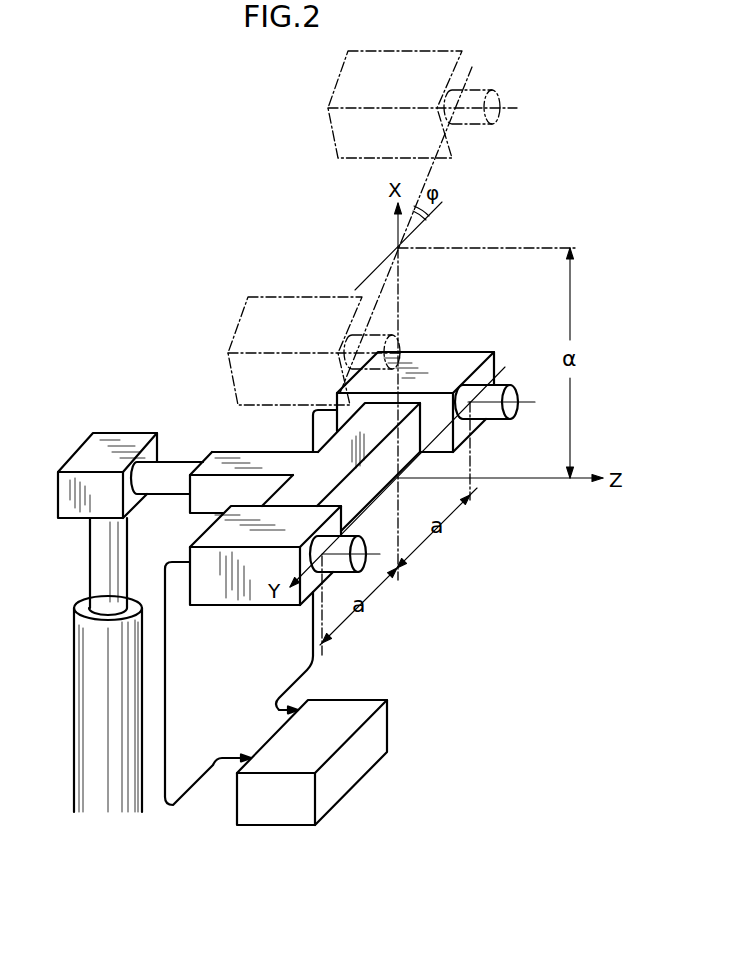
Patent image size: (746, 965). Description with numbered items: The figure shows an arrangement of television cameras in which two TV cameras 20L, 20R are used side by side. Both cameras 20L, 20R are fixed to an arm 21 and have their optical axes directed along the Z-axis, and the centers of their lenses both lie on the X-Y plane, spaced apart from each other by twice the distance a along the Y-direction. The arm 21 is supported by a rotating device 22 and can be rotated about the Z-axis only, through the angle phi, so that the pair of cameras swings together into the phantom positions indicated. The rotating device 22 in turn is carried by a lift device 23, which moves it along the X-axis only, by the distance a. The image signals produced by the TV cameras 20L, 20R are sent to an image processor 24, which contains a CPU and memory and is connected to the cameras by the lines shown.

The TV camera 20L is at (466, 356).
The TV camera 20R is at (230, 598).
The arm 21 is at (240, 458).
The rotating device 22 is at (125, 443).
The lift device 23 is at (90, 648).
The image processor 24 is at (345, 782).